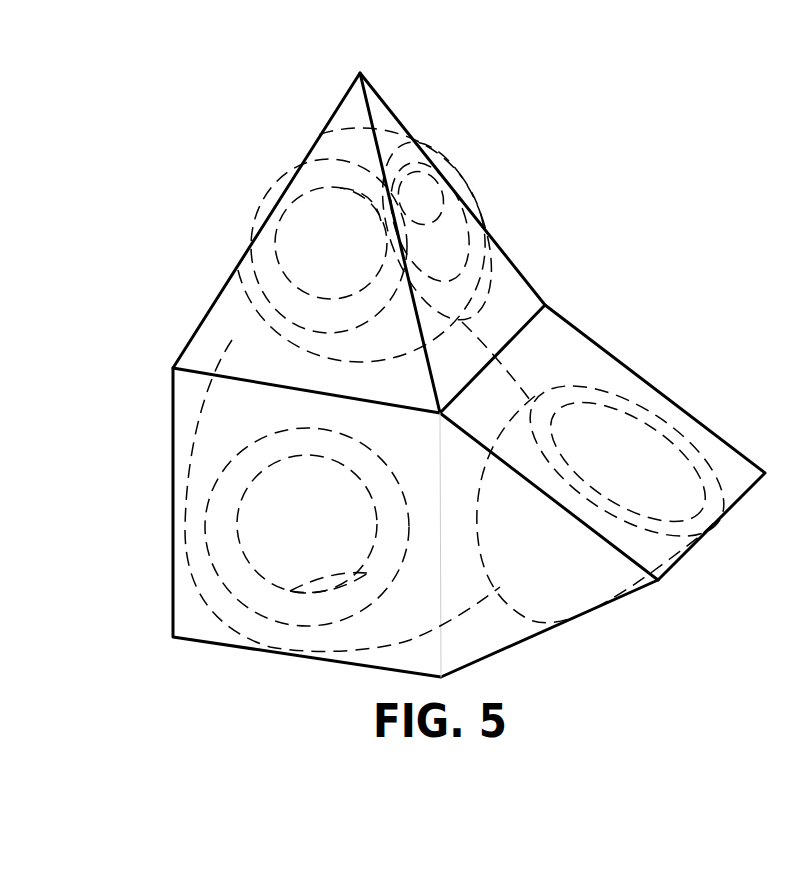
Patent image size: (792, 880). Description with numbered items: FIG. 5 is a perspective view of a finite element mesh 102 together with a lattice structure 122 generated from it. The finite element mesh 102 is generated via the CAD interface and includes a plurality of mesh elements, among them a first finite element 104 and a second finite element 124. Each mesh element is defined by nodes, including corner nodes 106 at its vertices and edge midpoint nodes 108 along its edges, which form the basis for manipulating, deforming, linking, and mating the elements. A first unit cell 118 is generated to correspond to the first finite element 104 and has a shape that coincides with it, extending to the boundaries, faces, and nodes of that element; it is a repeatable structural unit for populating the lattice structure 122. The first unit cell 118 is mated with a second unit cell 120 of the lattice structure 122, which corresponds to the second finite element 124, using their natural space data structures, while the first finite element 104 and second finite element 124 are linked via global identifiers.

The finite element mesh 102 is at (414, 365).
The first finite element 104 is at (414, 365).
The corner nodes 106 is at (360, 73).
The edge midpoint nodes 108 is at (259, 232).
The first unit cell 118 is at (227, 413).
The second unit cell 120 is at (260, 300).
The lattice structure 122 is at (500, 305).
The second finite element 124 is at (188, 342).